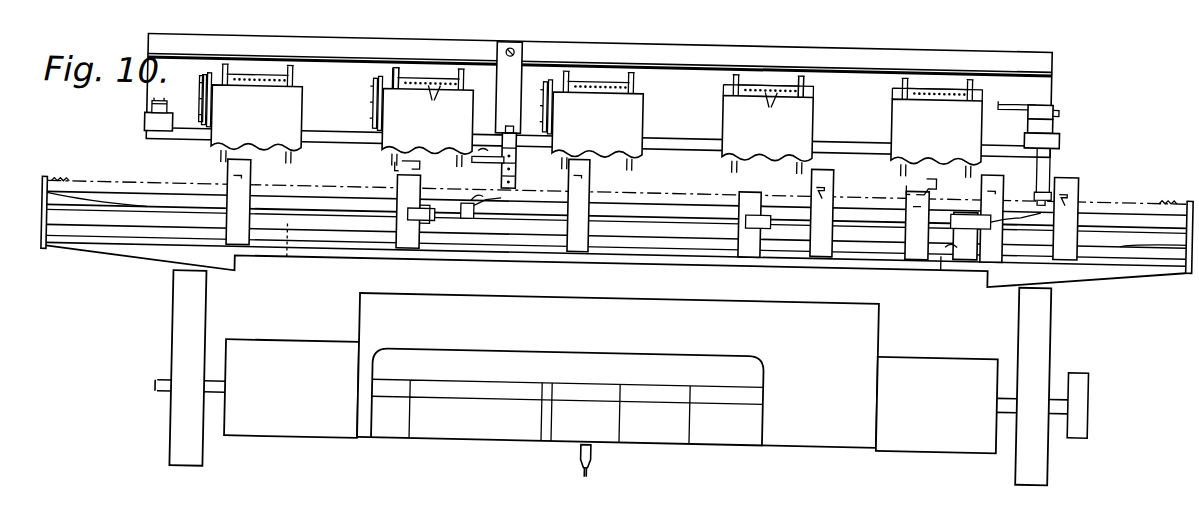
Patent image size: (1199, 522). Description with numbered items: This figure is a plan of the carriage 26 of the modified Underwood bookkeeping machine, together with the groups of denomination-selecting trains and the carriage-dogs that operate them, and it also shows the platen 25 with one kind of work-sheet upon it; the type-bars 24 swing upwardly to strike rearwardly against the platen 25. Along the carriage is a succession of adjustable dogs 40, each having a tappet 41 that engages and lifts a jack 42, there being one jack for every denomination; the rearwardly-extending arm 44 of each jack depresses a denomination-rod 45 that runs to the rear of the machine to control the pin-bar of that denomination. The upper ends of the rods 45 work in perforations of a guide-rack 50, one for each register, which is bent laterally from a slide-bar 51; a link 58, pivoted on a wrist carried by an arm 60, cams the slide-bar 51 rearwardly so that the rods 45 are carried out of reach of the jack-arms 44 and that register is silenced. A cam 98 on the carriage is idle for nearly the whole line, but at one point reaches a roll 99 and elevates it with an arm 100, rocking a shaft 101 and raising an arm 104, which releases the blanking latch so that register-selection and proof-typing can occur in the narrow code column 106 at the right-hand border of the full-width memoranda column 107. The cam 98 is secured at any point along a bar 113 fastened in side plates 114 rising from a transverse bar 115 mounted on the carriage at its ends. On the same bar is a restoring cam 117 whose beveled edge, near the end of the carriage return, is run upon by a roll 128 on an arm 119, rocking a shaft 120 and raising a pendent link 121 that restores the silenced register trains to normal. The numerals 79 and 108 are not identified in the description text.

The top cross bar 79 is at (599, 91).
The link 58 is at (207, 100).
The arm 60 is at (205, 107).
The slide-bar 51 is at (212, 128).
The guide-rack 50 is at (249, 84).
The jack-arm 44 is at (392, 78).
The denomination-rod 45 is at (602, 103).
The rock-shaft 101 is at (526, 179).
The arm 100 is at (484, 171).
The arm 104 is at (500, 170).
The jack 42 is at (393, 170).
The tappet 41 is at (418, 171).
The adjustable dog 40 is at (1082, 181).
The cam 98 is at (416, 212).
The roll 99 is at (472, 216).
The bar 113 is at (337, 219).
The side plate 114 is at (41, 227).
The transverse bar 115 is at (616, 266).
The carriage 26 is at (610, 377).
The platen 25 is at (291, 388).
The restoring cam 117 is at (754, 225).
The roll 128 is at (968, 236).
The arm 119 is at (1016, 199).
The shaft 120 is at (1050, 152).
The pendent link 121 is at (1003, 97).
The memoranda column 107 is at (460, 445).
The code column 106 is at (546, 445).
The amount column 108 is at (568, 443).
The type-bar 24 is at (594, 474).